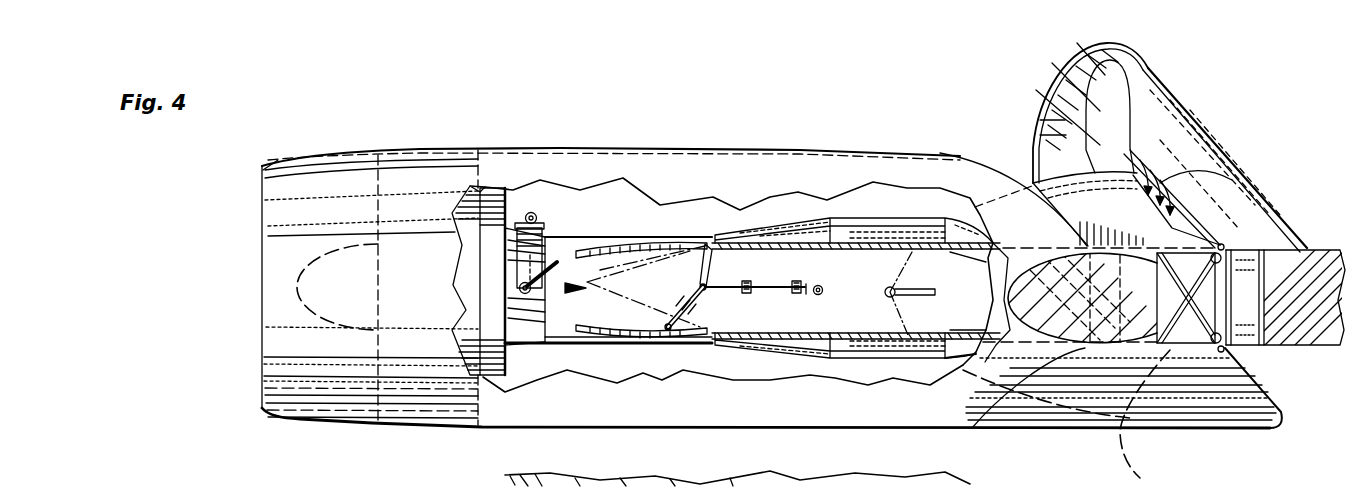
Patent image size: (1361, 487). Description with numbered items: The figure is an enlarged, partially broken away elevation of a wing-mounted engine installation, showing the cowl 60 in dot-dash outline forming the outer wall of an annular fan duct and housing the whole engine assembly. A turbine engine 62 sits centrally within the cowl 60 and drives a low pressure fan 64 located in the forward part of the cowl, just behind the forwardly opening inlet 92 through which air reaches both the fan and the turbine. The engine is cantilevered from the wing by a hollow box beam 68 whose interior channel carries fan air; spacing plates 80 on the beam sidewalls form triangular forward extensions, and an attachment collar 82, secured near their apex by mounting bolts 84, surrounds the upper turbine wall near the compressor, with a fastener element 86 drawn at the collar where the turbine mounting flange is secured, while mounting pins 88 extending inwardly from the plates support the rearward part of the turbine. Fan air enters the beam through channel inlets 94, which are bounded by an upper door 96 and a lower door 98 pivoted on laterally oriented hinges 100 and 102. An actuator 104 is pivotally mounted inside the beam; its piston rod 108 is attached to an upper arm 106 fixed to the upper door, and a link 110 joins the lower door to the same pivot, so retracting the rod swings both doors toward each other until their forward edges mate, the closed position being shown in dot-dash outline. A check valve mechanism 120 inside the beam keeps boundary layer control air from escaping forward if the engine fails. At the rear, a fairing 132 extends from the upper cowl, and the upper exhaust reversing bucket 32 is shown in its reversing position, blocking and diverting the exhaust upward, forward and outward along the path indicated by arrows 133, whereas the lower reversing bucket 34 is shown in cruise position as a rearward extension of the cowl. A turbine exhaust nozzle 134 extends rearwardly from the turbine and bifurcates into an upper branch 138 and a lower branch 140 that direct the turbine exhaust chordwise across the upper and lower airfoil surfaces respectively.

The exhaust reversing bucket 32 is at (1178, 133).
The lower reversing bucket 34 is at (1188, 418).
The cowl 60 is at (305, 156).
The turbine engine 62 is at (578, 345).
The low pressure fan 64 is at (486, 186).
The box beam 68 is at (888, 248).
The spacing plates 80 is at (562, 345).
The attachment collar 82 is at (545, 240).
The mounting bolts 84 is at (540, 282).
The pivot pin 86 is at (533, 212).
The mounting pins 88 is at (826, 294).
The inlet 92 is at (262, 177).
The channel inlets 94 is at (485, 305).
The upper door 96 is at (622, 247).
The lower door 98 is at (624, 338).
The hinge 100 is at (714, 240).
The hinge 102 is at (724, 343).
The actuator 104 is at (790, 293).
The upper arm 106 is at (712, 250).
The piston rod 108 is at (688, 297).
The link 110 is at (688, 303).
The check valve mechanism 120 is at (882, 290).
The fairing 132 is at (1034, 183).
The arrows 133 is at (1082, 38).
The turbine exhaust nozzle 134 is at (960, 365).
The upper branch 138 is at (1238, 181).
The lower branch 140 is at (1138, 477).